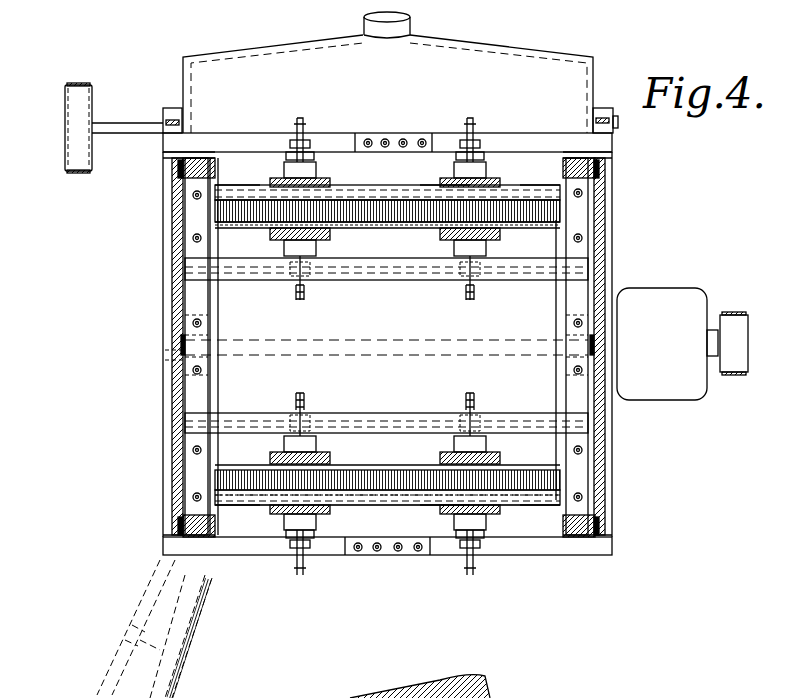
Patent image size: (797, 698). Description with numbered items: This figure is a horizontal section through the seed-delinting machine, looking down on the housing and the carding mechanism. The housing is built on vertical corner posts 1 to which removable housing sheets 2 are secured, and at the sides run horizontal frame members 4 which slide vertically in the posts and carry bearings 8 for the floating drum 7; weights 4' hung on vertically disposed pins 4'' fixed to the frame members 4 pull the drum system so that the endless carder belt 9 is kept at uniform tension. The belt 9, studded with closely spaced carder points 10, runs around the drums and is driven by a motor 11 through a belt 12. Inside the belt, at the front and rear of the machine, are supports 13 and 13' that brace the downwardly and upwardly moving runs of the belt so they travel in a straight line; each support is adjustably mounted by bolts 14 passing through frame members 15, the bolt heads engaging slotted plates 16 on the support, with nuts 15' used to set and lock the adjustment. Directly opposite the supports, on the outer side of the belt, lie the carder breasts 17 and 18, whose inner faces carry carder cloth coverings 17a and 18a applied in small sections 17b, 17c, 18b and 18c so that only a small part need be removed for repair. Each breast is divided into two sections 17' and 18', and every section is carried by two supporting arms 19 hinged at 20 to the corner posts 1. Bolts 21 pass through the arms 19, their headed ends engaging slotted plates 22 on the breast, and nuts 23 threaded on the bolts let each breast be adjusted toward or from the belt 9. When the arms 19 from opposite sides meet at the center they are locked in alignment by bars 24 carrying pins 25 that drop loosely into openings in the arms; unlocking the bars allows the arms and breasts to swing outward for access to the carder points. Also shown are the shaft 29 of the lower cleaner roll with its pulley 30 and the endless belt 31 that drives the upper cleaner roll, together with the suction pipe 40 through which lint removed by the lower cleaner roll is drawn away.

The corner post 1 is at (178, 170).
The housing sheet 2 is at (172, 235).
The horizontal frame member 4 is at (365, 344).
The weight 4' is at (396, 346).
The pin 4'' is at (393, 345).
The floating drum 7 is at (168, 360).
The bearing 8 is at (190, 345).
The carder belt 9 is at (420, 228).
The carder points 10 is at (556, 215).
The motor 11 is at (700, 400).
The belt 12 is at (742, 375).
The support 13 is at (387, 226).
The support 13' is at (387, 462).
The bolt 14 is at (298, 295).
The frame member 15 is at (386, 345).
The nut 15' is at (390, 346).
The slotted plate 16 is at (282, 236).
The carder breast 17 is at (387, 180).
The carder breast section 17' is at (396, 181).
The carder cloth covering 17a is at (436, 190).
The carder cloth section 17b is at (532, 190).
The carder cloth section 17c is at (248, 190).
The carder breast 18 is at (387, 510).
The carder breast section 18' is at (407, 487).
The carder cloth covering 18a is at (440, 504).
The carder cloth section 18b is at (538, 504).
The carder cloth section 18c is at (256, 504).
The supporting arm 19 is at (268, 133).
The hinge 20 is at (180, 160).
The bolt 21 is at (303, 132).
The slotted plate 22 is at (312, 178).
The nut 23 is at (314, 156).
The locking bar 24 is at (424, 138).
The pin 25 is at (388, 138).
The shaft 29 is at (114, 128).
The pulley 30 is at (172, 108).
The endless belt 31 is at (85, 85).
The suction pipe 40 is at (411, 22).